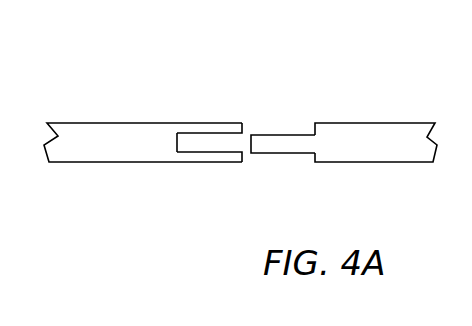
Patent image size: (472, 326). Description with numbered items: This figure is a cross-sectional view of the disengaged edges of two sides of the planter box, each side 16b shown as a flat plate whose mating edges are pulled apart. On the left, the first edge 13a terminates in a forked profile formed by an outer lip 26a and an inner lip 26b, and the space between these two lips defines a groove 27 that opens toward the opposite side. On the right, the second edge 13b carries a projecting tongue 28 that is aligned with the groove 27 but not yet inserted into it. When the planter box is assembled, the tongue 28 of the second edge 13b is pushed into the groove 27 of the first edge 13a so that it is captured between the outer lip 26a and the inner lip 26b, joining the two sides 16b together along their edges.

The first edge 13a is at (155, 102).
The second edge 13b is at (341, 117).
The side 16b is at (133, 157).
The outer lip 26a is at (202, 163).
The inner lip 26b is at (209, 126).
The groove 27 is at (220, 143).
The tongue 28 is at (284, 135).